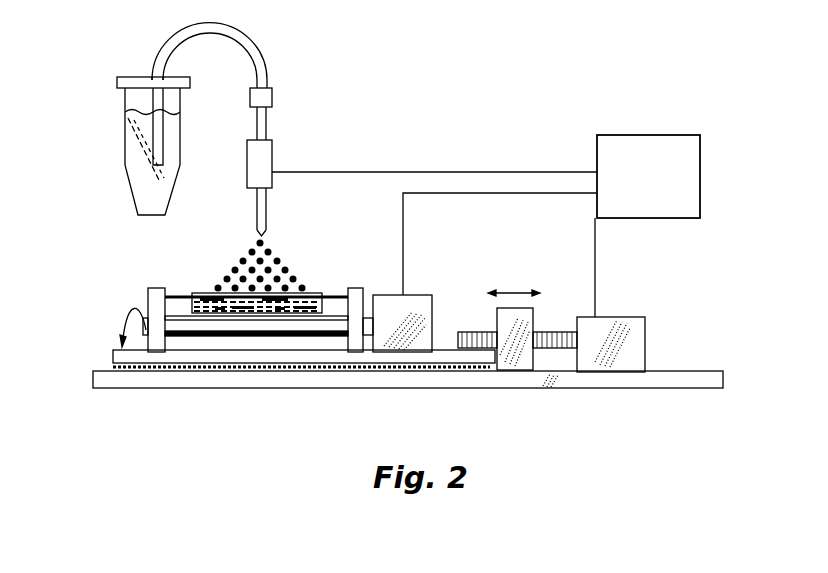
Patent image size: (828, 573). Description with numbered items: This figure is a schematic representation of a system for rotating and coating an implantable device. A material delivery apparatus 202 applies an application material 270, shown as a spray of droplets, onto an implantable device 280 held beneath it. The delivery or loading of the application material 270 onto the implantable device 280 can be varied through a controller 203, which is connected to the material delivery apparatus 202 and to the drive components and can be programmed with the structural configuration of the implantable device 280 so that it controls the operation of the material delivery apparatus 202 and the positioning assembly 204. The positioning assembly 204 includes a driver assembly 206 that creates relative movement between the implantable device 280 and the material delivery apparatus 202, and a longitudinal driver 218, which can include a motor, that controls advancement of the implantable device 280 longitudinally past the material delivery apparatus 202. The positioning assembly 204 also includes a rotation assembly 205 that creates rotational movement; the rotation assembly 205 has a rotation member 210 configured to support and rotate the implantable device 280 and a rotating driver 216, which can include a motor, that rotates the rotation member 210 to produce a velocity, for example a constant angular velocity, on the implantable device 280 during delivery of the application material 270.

The material delivery apparatus 202 is at (271, 147).
The controller 203 is at (648, 176).
The positioning assembly 204 is at (316, 392).
The rotation assembly 205 is at (142, 297).
The driver assembly 206 is at (518, 390).
The rotation member 210 is at (177, 294).
The rotating driver 216 is at (436, 302).
The longitudinal driver 218 is at (641, 345).
The application material 270 is at (241, 263).
The implantable device 280 is at (313, 296).